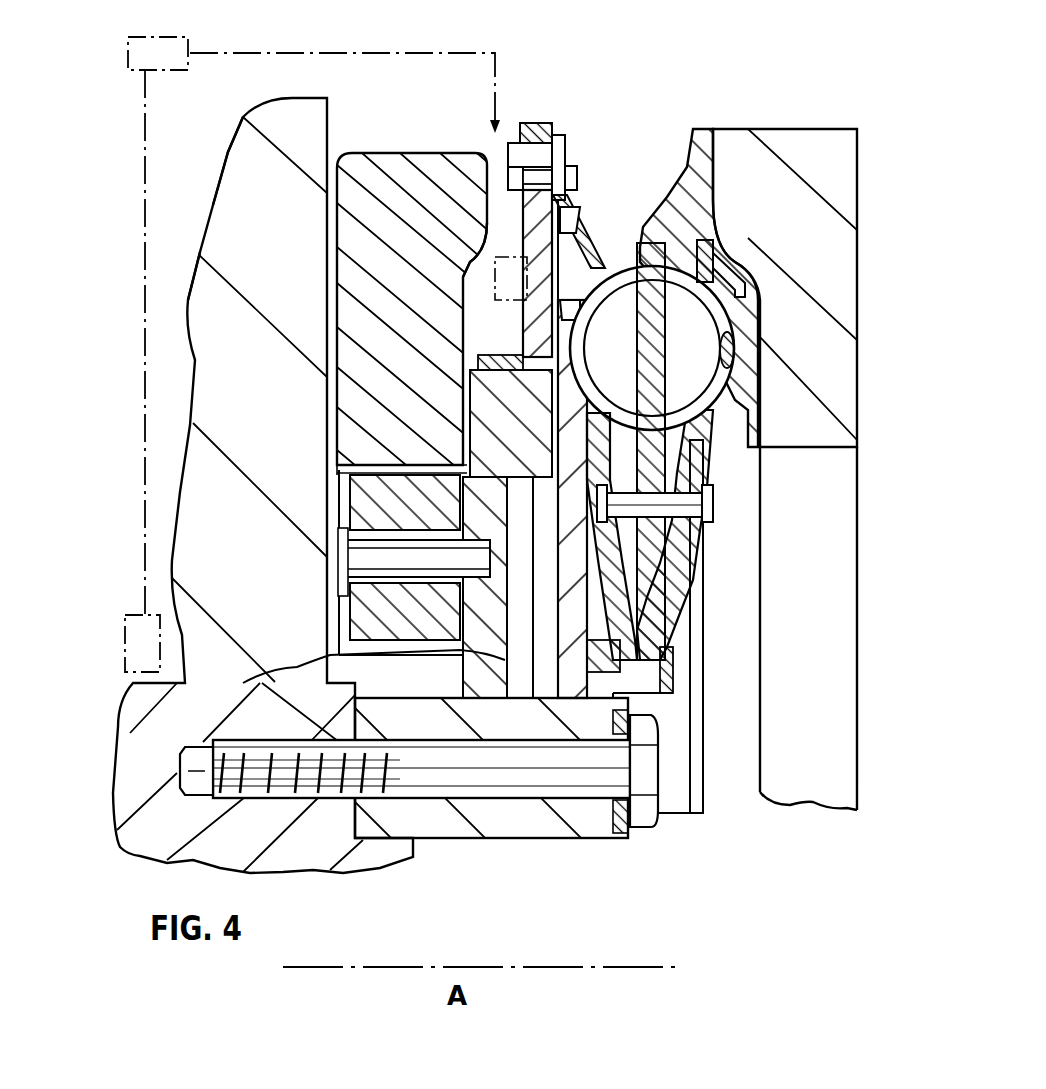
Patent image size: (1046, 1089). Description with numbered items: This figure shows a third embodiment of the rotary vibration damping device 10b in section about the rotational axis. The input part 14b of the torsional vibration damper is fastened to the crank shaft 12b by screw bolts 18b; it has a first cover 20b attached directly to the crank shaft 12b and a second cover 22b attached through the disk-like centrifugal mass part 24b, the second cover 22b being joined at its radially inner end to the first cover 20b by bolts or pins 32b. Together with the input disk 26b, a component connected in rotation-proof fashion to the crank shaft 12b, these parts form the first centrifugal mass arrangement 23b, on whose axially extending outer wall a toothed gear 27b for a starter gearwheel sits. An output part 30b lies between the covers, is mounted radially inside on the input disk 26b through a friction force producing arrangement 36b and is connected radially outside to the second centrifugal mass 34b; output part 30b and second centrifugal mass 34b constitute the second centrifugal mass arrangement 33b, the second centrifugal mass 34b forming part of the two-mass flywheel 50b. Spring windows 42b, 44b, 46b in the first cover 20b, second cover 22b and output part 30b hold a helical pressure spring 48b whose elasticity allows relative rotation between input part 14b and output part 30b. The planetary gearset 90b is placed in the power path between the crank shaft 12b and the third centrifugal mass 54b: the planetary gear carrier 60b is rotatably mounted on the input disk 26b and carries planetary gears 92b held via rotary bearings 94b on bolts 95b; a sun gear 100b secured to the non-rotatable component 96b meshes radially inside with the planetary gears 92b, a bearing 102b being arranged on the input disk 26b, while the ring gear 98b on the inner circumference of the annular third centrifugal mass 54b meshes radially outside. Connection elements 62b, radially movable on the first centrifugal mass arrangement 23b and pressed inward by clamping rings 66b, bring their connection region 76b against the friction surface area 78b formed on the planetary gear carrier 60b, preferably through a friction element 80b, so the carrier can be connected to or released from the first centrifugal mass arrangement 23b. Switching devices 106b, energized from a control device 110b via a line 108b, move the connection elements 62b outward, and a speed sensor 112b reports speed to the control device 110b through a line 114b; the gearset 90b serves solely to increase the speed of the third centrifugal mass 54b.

The rotary vibration damping device 10b is at (599, 100).
The crank shaft 12b is at (143, 737).
The input part 14b is at (578, 227).
The screw bolts 18b is at (642, 827).
The first cover 20b is at (690, 812).
The second cover 22b is at (572, 205).
The first centrifugal mass arrangement 23b is at (560, 135).
The centrifugal mass part 24b is at (580, 207).
The input disk 26b is at (545, 842).
The toothed gear 27b is at (531, 122).
The output part 30b is at (685, 150).
The bolts or pins 32b is at (713, 520).
The second centrifugal mass arrangement 33b is at (790, 126).
The second centrifugal mass 34b is at (855, 308).
The friction force producing arrangement 36b is at (675, 690).
The spring window 42b is at (712, 325).
The spring window 44b is at (700, 352).
The spring window 46b is at (700, 398).
The helical pressure spring 48b is at (708, 402).
The two-mass flywheel 50b is at (772, 431).
The third centrifugal mass 54b is at (463, 360).
The planetary gear carrier 60b is at (243, 683).
The connection elements 62b is at (463, 337).
The clamping ring 66b is at (463, 283).
The connection region 76b is at (463, 430).
The friction surface area 78b is at (353, 455).
The friction element 80b is at (337, 428).
The planetary gearset 90b is at (369, 502).
The planetary gears 92b is at (353, 507).
The rotary bearings 94b is at (353, 533).
The bolts 95b is at (345, 570).
The non-rotatable component 96b is at (340, 150).
The ring gear 98b is at (340, 478).
The sun gear 100b is at (413, 840).
The bearing 102b is at (628, 742).
The switching device 106b is at (483, 210).
The line 108b is at (376, 48).
The control device 110b is at (182, 55).
The speed sensor 112b is at (142, 635).
The line 114b is at (145, 388).